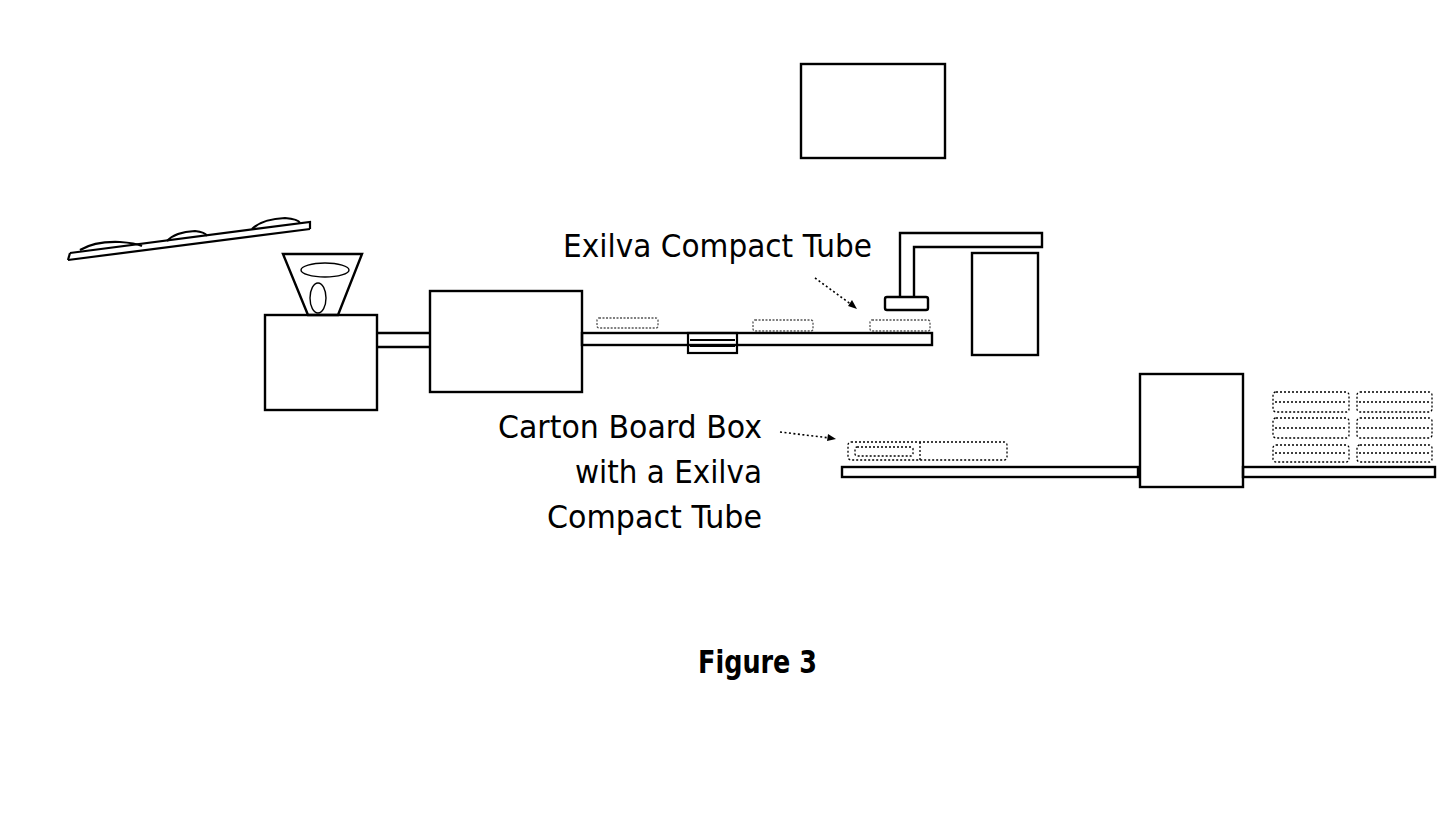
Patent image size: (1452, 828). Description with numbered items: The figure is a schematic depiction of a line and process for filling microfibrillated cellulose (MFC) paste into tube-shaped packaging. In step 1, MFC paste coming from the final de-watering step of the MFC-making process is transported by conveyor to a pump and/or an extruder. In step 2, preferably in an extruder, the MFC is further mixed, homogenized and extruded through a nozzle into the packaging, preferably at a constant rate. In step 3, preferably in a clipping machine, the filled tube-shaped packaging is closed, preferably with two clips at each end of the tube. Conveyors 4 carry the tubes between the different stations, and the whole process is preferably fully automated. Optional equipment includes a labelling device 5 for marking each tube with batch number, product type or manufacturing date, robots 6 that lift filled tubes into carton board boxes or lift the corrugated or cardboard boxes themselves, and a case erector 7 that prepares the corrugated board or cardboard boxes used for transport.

The step 1 (MFC paste transport) 1 is at (189, 217).
The step 2 (extruder) 2 is at (321, 332).
The step 3 (clipping machine) 3 is at (506, 341).
The conveyors 4 is at (712, 317).
The labelling device 5 is at (963, 294).
The robots 6 is at (873, 111).
The case erector 7 is at (1191, 430).